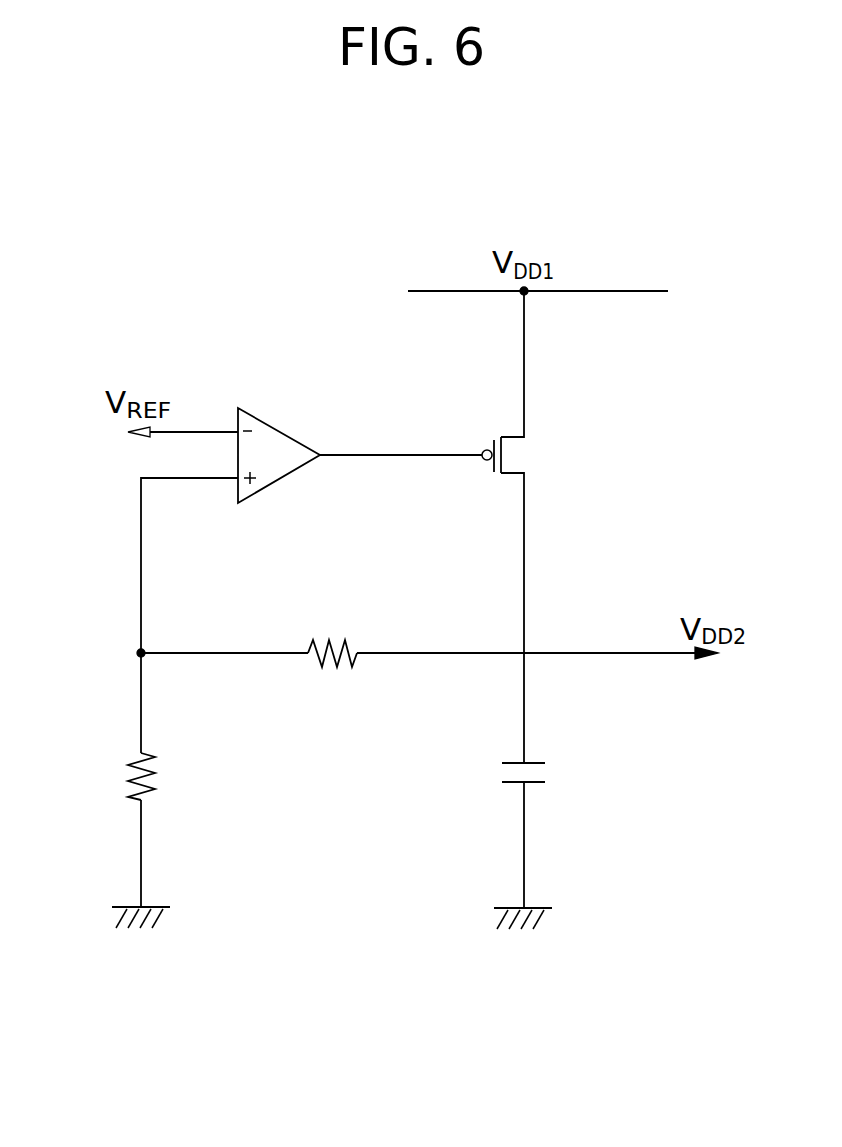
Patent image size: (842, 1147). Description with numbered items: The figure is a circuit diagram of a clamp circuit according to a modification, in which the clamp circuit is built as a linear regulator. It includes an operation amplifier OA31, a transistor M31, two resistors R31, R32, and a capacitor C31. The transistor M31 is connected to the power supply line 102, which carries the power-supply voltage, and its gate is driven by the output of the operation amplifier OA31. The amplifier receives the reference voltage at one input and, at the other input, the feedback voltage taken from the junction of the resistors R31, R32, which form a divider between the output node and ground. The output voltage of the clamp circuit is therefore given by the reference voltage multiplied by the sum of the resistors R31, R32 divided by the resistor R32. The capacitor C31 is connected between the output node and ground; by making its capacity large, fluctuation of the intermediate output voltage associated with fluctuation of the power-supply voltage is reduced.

The power supply line 102 is at (647, 273).
The operation amplifier OA31 is at (280, 430).
The transistor M31 is at (525, 463).
The resistor R31 is at (334, 678).
The resistor R32 is at (114, 780).
The capacitor C31 is at (543, 773).